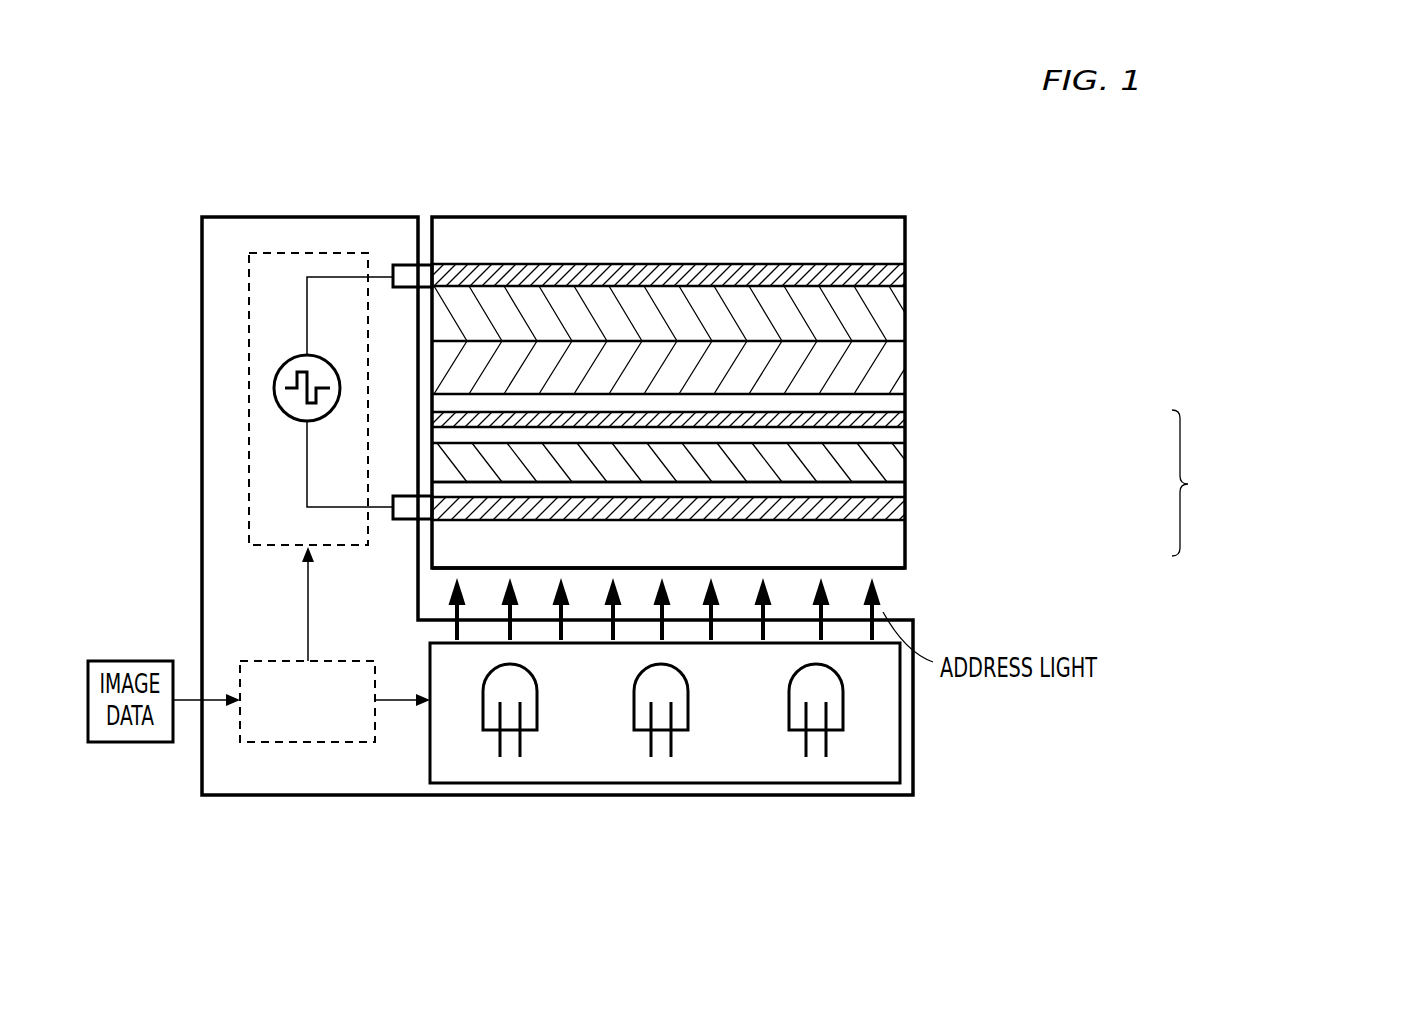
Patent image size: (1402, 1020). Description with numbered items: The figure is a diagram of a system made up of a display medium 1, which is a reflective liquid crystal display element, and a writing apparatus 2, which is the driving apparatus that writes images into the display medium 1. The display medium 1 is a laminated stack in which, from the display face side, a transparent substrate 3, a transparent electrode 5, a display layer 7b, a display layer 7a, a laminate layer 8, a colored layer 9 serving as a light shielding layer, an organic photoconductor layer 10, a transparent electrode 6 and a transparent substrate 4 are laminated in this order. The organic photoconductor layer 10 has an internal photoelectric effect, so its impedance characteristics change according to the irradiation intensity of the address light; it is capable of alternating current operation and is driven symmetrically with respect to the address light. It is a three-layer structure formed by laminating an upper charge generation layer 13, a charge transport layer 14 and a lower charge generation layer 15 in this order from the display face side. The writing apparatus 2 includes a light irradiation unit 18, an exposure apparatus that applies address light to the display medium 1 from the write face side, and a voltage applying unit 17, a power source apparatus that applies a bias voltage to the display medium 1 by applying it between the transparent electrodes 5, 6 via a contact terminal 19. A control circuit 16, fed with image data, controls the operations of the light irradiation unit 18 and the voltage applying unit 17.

The display medium 1 is at (706, 189).
The writing apparatus 2 is at (378, 227).
The transparent substrate 3 is at (893, 227).
The transparent substrate 4 is at (905, 555).
The transparent electrode 5 is at (907, 276).
The transparent electrode 6 is at (904, 515).
The display layer 7a is at (892, 326).
The display layer 7b is at (894, 320).
The laminate layer 8 is at (900, 400).
The colored layer 9 is at (906, 418).
The organic photoconductor layer 10 is at (913, 483).
The upper charge generation layer 13 is at (905, 435).
The charge transport layer 14 is at (905, 462).
The lower charge generation layer 15 is at (905, 490).
The control circuit 16 is at (274, 661).
The voltage applying unit 17 is at (262, 253).
The light irradiation unit 18 is at (900, 746).
The contact terminal 19 is at (405, 270).